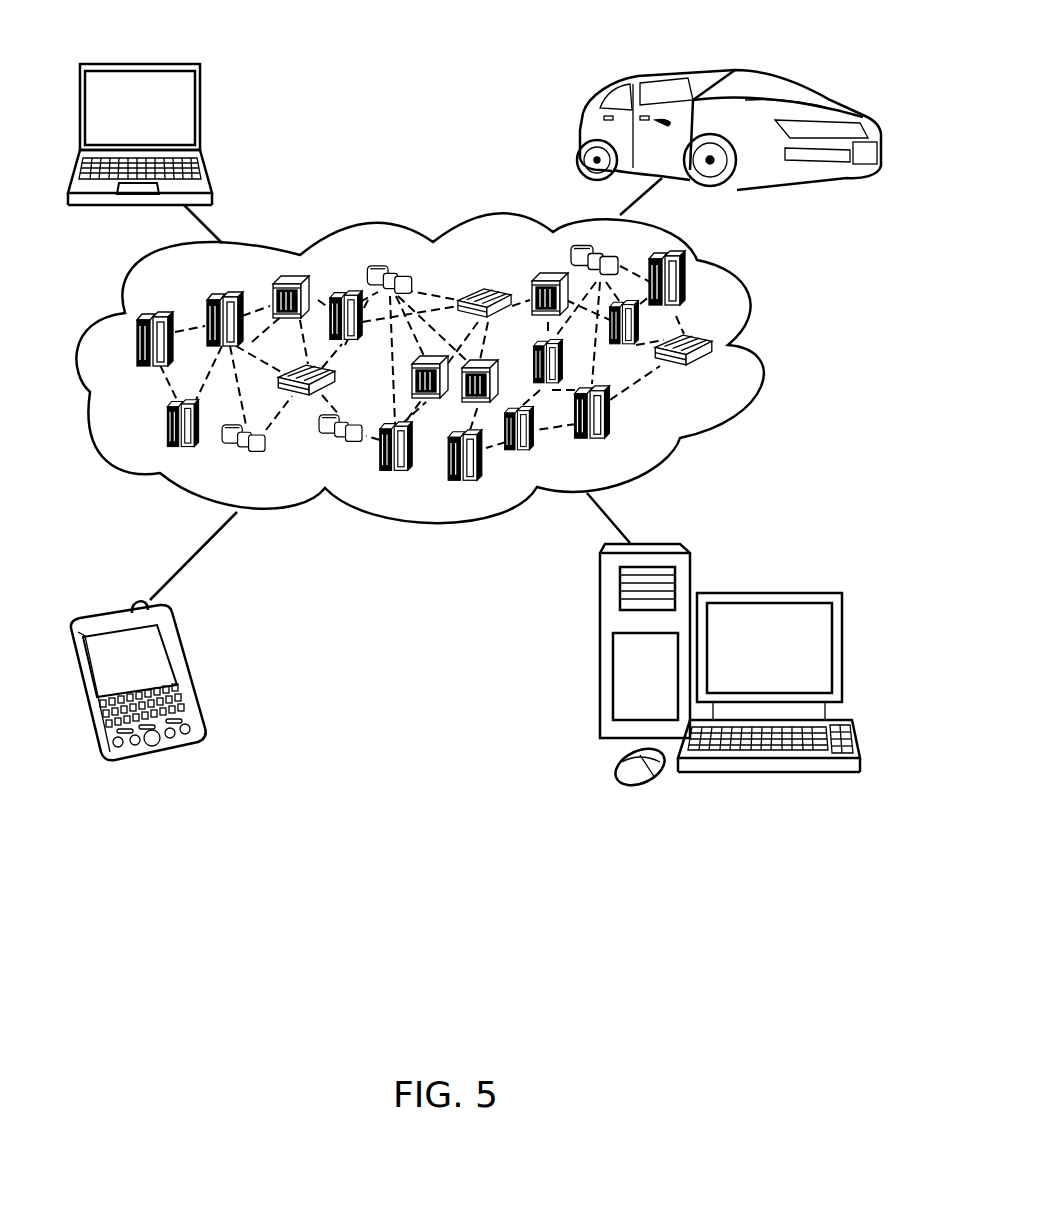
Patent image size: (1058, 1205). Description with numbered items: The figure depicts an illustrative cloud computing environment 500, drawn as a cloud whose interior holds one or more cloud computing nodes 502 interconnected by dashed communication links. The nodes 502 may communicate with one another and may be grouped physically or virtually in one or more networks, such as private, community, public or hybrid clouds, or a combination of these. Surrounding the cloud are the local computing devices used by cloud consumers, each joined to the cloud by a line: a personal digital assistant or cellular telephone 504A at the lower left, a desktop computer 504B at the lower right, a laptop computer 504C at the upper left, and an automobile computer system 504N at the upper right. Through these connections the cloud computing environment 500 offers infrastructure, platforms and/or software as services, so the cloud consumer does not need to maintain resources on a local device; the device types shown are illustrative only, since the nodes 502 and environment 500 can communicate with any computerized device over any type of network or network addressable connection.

The cloud computing environment 500 is at (750, 326).
The cloud computing nodes 502 is at (726, 374).
The personal digital assistant (PDA) or cellular telephone 504A is at (177, 643).
The desktop computer 504B is at (757, 593).
The laptop computer 504C is at (198, 93).
The automobile computer system 504N is at (582, 132).